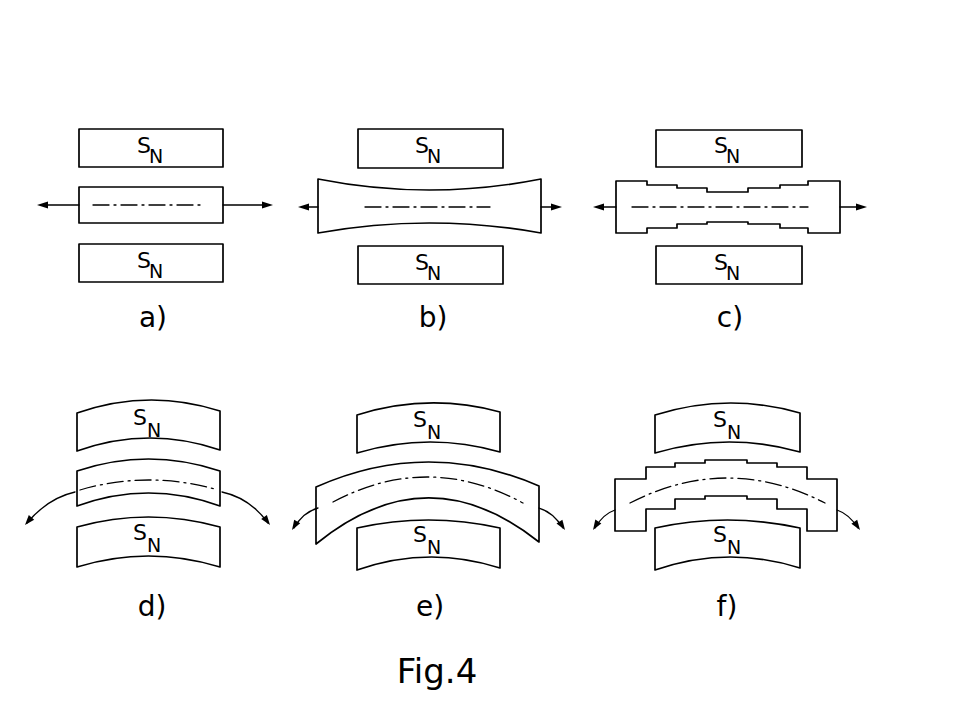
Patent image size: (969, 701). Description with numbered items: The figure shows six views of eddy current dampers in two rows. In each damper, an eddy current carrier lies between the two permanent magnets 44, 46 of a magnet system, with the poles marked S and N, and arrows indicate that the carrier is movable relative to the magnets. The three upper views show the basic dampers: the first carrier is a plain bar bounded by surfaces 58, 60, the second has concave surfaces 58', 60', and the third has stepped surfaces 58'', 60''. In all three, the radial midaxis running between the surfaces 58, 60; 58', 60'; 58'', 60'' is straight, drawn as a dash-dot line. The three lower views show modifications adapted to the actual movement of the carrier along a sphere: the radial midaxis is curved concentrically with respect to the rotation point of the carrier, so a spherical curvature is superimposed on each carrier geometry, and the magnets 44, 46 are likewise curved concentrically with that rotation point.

The permanent magnet 44 is at (82, 430).
The permanent magnet 46 is at (90, 557).
The surface 58 is at (94, 134).
The surface 58' is at (330, 134).
The surface 58'' is at (628, 133).
The surface 60 is at (203, 274).
The surface 60' is at (524, 277).
The surface 60'' is at (828, 278).